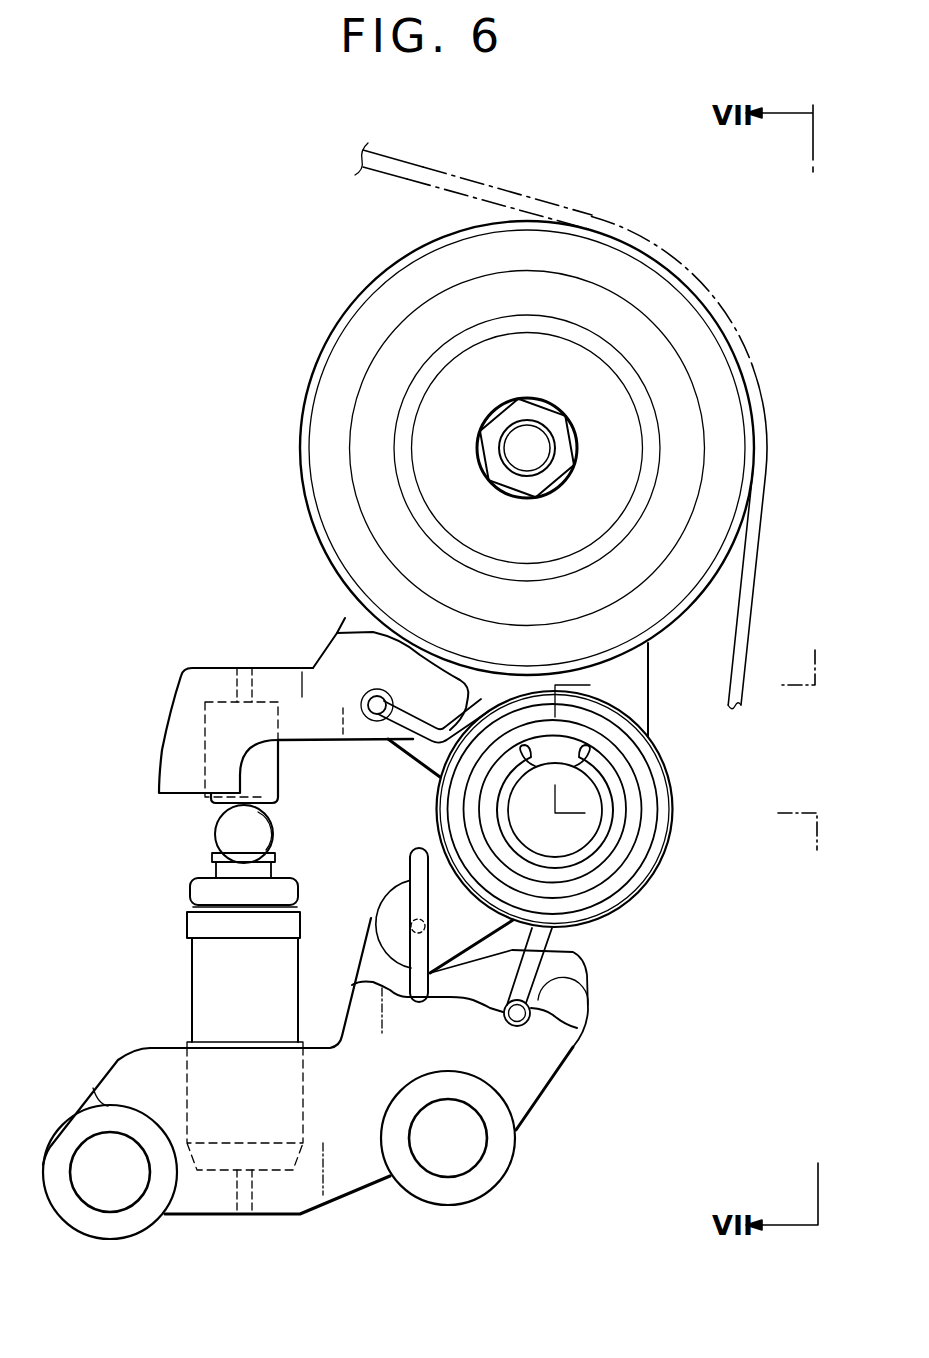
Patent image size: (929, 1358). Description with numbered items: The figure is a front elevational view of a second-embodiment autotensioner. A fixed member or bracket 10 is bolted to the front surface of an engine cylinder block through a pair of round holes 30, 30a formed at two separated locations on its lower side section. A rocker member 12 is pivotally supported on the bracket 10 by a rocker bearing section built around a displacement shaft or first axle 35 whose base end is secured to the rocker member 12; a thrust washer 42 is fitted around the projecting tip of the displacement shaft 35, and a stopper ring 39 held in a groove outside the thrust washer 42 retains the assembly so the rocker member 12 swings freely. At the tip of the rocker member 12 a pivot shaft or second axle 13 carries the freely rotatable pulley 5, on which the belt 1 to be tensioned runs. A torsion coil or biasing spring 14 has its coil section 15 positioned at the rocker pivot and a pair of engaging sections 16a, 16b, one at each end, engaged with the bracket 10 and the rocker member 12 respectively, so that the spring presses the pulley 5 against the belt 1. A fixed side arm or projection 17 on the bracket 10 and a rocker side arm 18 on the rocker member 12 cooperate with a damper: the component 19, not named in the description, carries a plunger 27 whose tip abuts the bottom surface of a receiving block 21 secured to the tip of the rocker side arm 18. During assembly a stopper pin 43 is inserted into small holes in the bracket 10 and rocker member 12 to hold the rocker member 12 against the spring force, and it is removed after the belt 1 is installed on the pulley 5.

The belt 1 is at (636, 236).
The pulley 5 is at (553, 448).
The fixed member or bracket 10 is at (351, 1098).
The rocker member 12 is at (394, 795).
The pivot shaft or second axle 13 is at (531, 430).
The torsion coil or biasing spring 14 is at (582, 824).
The coil section 15 is at (612, 905).
The engaging section 16a is at (560, 1018).
The engaging section 16b is at (375, 721).
The fixed side arm or projection 17 is at (372, 1185).
The rocker side arm 18 is at (178, 762).
The hydraulic damper 19 is at (231, 976).
The receiving block 21 is at (215, 800).
The plunger 27 is at (268, 818).
The round hole 30 is at (460, 1160).
The round hole 30a is at (112, 1205).
The displacement shaft or first axle 35 is at (590, 792).
The stopper ring 39 is at (605, 822).
The thrust washer 42 is at (622, 810).
The stopper pin or binding 43 is at (413, 852).